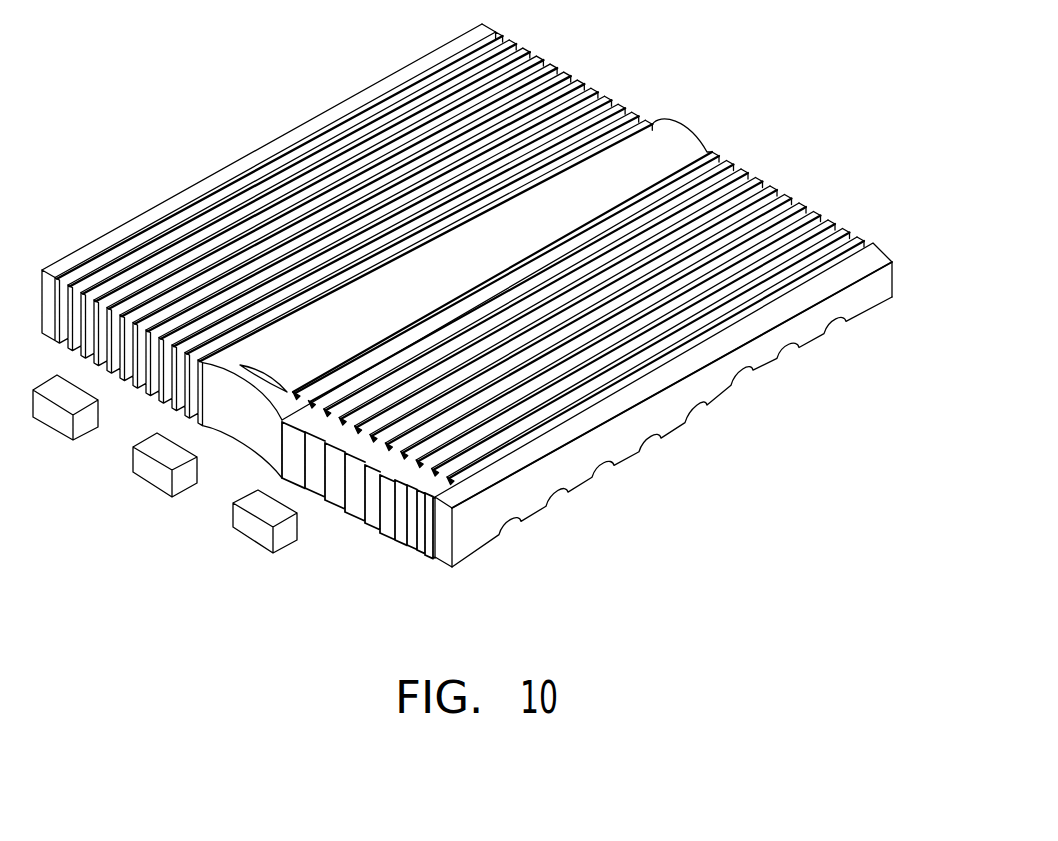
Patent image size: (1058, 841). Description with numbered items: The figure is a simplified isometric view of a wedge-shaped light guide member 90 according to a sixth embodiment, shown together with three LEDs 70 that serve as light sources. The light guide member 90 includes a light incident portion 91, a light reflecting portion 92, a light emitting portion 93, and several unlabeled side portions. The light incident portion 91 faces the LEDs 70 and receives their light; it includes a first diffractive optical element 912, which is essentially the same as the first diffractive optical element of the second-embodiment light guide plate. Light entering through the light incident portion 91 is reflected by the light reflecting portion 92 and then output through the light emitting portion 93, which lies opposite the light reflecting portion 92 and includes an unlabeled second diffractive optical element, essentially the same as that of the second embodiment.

The light guide member 90 is at (320, 105).
The light incident portion 91 is at (440, 553).
The first diffractive optical element 912 is at (382, 538).
The light reflecting portion 92 is at (810, 348).
The light emitting portion 93 is at (886, 250).
The LEDs 70 is at (253, 525).